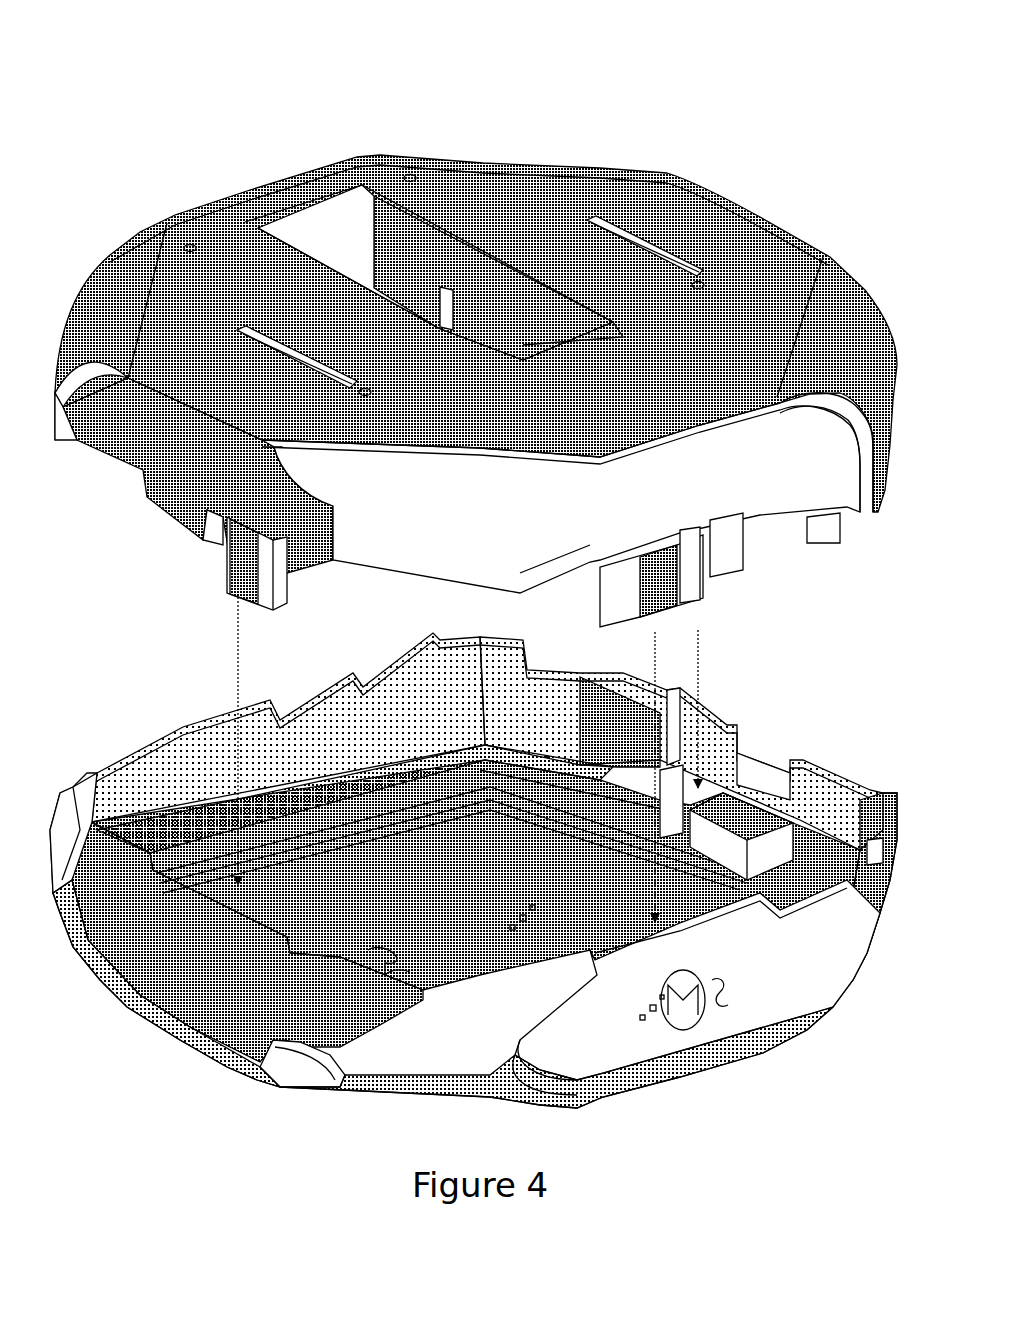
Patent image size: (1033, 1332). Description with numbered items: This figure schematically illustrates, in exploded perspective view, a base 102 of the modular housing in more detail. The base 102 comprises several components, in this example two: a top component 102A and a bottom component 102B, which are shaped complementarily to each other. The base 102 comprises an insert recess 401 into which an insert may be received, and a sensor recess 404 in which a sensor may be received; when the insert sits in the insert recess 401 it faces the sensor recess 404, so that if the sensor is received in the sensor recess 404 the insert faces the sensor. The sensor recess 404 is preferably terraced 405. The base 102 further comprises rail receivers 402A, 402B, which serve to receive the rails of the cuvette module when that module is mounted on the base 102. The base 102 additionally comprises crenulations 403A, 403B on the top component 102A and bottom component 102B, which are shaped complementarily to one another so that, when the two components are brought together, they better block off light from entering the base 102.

The base 102 is at (260, 113).
The top component 102A is at (464, 333).
The bottom component 102B is at (502, 904).
The insert recess 401 is at (418, 235).
The rail receiver 402A is at (298, 355).
The rail receiver 402B is at (665, 260).
The crenulation 403A is at (192, 510).
The crenulation 403B is at (746, 758).
The sensor recess 404 is at (342, 932).
The terraced 405 is at (225, 858).